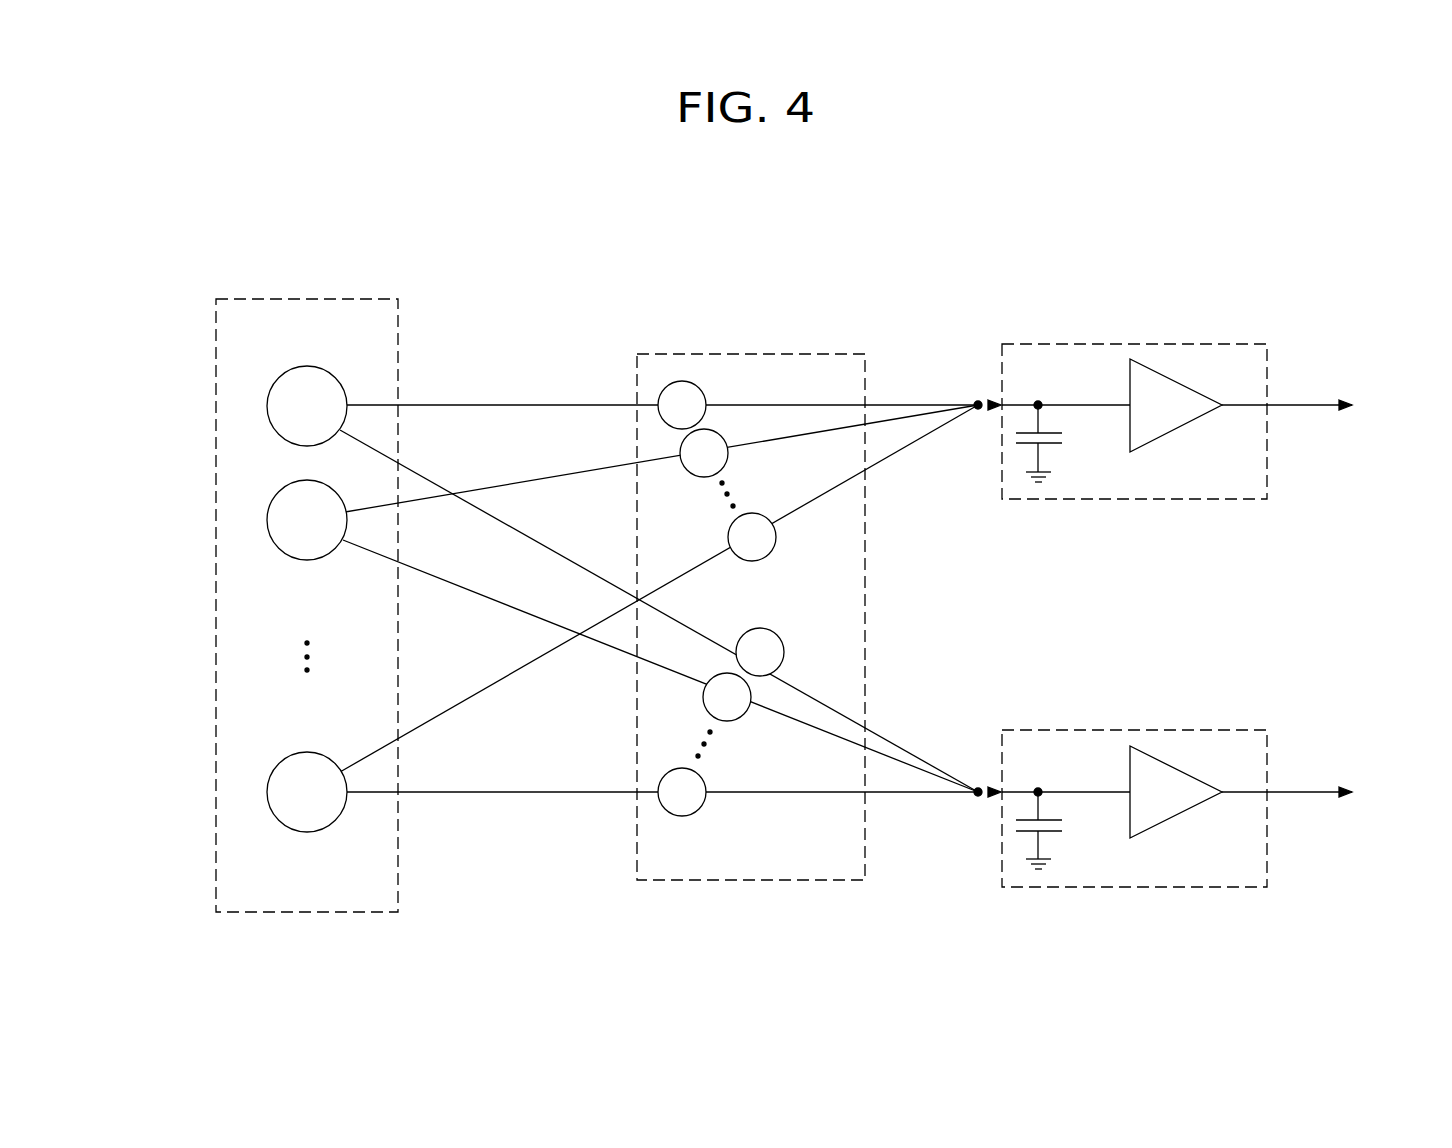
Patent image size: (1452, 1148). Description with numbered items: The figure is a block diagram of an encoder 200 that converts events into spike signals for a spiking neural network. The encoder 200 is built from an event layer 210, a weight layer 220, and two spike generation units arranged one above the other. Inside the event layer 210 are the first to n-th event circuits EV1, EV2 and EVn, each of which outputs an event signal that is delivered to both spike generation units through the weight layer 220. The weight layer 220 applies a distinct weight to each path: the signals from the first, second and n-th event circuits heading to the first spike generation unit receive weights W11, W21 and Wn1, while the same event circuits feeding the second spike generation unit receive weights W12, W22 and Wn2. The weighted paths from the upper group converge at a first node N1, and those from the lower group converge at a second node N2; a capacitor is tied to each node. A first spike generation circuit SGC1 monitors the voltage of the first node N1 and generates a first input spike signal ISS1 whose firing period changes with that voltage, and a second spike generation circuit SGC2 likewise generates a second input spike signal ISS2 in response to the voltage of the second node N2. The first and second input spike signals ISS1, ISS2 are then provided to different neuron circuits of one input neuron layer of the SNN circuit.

The encoder 200 is at (1323, 217).
The event layer 210 is at (352, 298).
The weight layer 220 is at (815, 354).
The first event circuit EV1 is at (328, 418).
The second event circuit EV2 is at (328, 532).
The n-th event circuit EVn is at (328, 804).
The weight W11 is at (699, 416).
The weight W21 is at (721, 464).
The weight Wn1 is at (769, 548).
The weight W12 is at (777, 663).
The weight W22 is at (744, 708).
The weight Wn2 is at (699, 803).
The first node N1 is at (1038, 394).
The second node N2 is at (1038, 781).
The first spike generation circuit SGC1 is at (1176, 405).
The second spike generation circuit SGC2 is at (1176, 792).
The first input spike signal ISS1 is at (1304, 392).
The second input spike signal ISS2 is at (1304, 779).